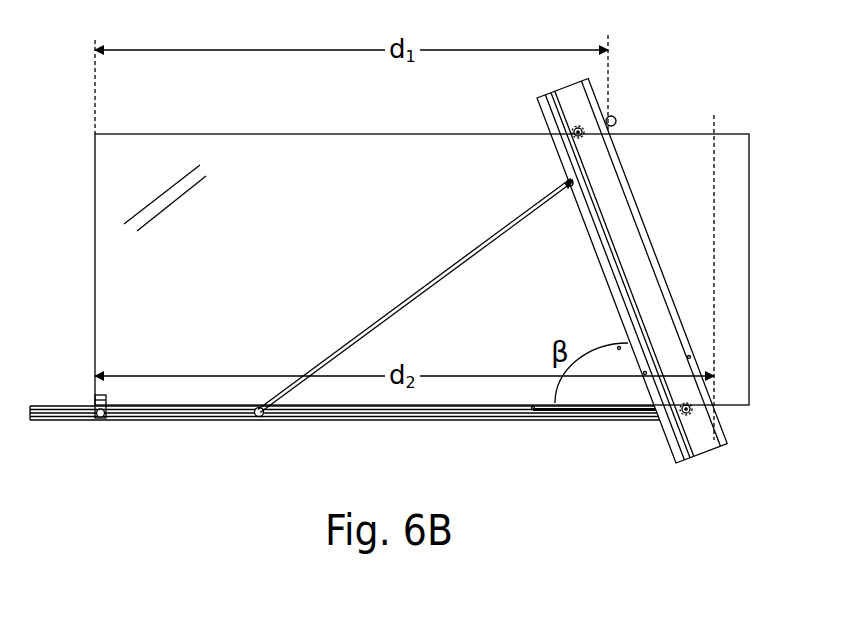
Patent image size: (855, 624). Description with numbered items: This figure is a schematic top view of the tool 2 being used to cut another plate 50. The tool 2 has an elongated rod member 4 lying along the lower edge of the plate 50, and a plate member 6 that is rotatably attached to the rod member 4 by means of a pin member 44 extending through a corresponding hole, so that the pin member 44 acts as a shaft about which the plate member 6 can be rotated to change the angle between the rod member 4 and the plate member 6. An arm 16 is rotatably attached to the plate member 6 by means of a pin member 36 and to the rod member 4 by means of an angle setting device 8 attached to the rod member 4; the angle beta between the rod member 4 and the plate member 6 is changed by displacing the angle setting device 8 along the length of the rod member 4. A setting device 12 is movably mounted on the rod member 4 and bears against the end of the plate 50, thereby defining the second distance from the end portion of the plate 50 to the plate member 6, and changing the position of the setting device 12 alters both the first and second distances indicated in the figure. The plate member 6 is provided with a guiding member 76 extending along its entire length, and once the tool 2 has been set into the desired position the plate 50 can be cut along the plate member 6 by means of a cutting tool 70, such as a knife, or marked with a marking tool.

The tool 2 is at (632, 470).
The rod member 4 is at (178, 422).
The plate member 6 is at (566, 98).
The angle setting device 8 is at (259, 425).
The setting device 12 is at (100, 424).
The arm 16 is at (420, 292).
The pin member 36 is at (571, 182).
The pin member 44 is at (694, 411).
The plate 50 is at (262, 148).
The cutting tool 70 is at (614, 115).
The guiding member 76 is at (565, 132).